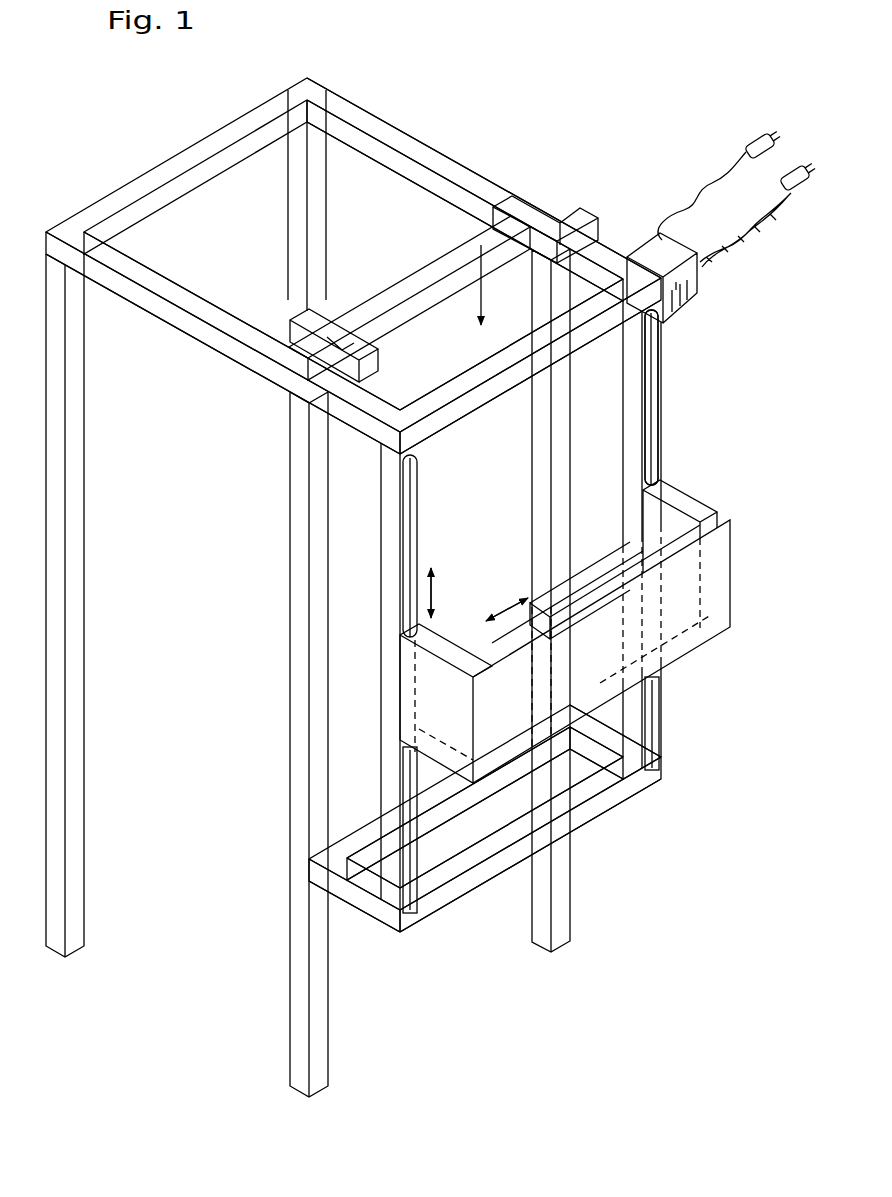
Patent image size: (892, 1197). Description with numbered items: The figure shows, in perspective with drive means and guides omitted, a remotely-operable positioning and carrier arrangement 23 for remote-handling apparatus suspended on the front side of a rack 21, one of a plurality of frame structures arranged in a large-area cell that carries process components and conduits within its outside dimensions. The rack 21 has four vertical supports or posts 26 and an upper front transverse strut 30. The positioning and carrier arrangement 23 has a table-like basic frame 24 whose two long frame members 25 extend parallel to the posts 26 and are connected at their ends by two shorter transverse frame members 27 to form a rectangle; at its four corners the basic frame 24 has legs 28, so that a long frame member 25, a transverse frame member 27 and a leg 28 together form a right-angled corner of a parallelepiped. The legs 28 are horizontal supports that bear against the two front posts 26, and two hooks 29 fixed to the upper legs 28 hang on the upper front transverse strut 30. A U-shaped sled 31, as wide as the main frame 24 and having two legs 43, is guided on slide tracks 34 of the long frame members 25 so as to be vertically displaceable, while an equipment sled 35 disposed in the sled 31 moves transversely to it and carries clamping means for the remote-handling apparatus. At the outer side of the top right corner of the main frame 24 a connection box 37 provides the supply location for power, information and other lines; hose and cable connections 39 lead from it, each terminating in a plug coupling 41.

The rack 21 is at (411, 122).
The positioning and carrier arrangement 23 is at (668, 410).
The basic frame 24 is at (648, 378).
The long frame members 25 is at (640, 453).
The vertical supports or posts 26 is at (300, 232).
The transverse frame members 27 is at (497, 390).
The legs 28 is at (597, 253).
The hooks 29 is at (330, 325).
The upper front transverse strut 30 is at (455, 288).
The sled 31 is at (744, 530).
The slide tracks 34 is at (660, 735).
The equipment sled 35 is at (592, 573).
The connection box 37 is at (700, 292).
The hose and cable connections 39 is at (722, 173).
The plug coupling 41 is at (796, 168).
The legs 43 is at (425, 657).